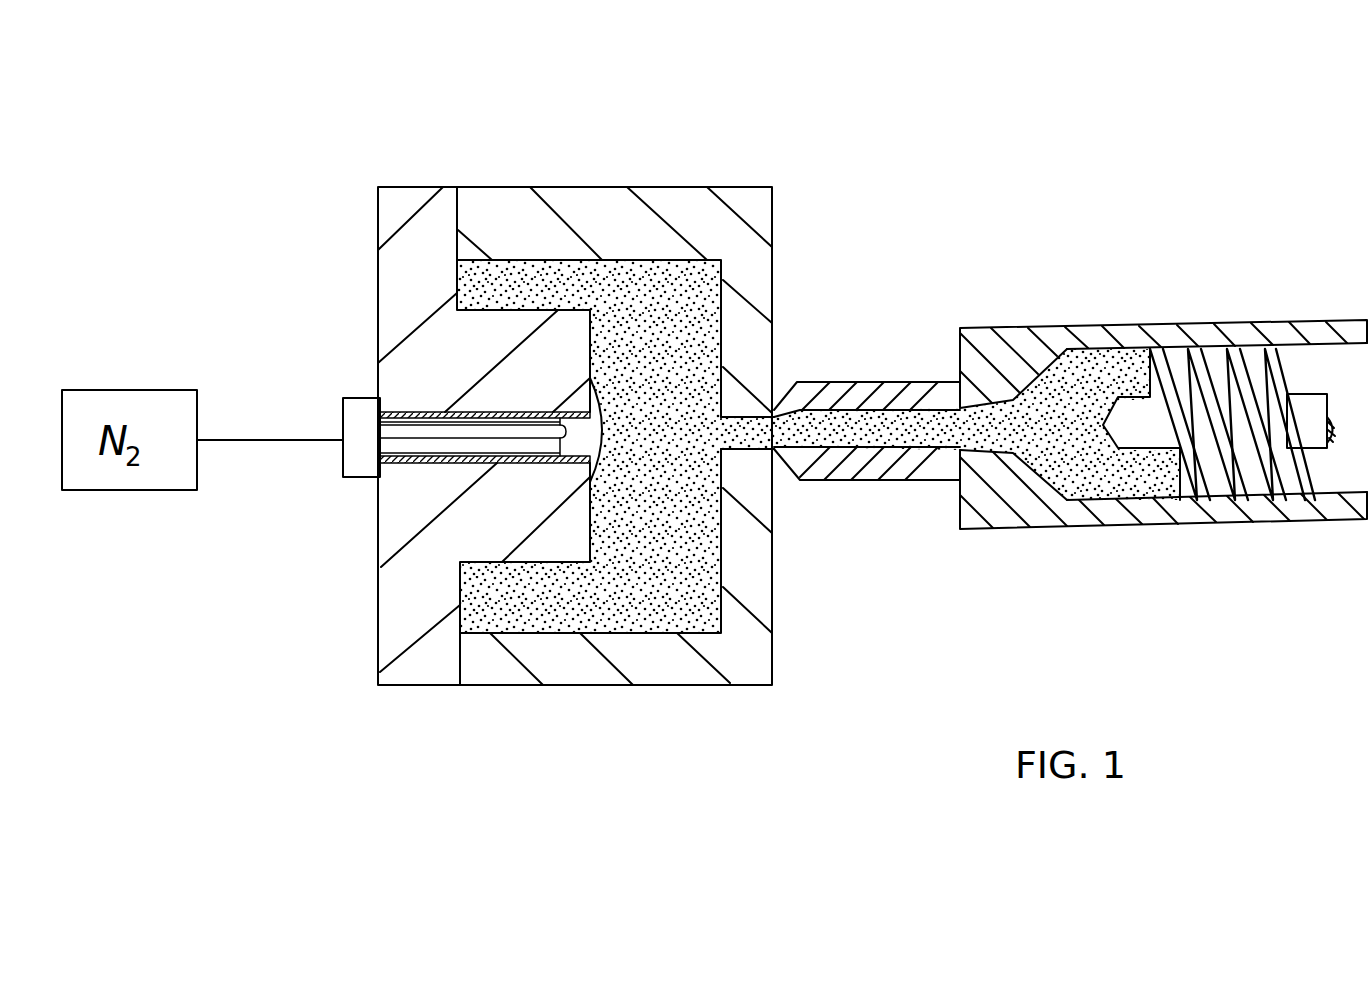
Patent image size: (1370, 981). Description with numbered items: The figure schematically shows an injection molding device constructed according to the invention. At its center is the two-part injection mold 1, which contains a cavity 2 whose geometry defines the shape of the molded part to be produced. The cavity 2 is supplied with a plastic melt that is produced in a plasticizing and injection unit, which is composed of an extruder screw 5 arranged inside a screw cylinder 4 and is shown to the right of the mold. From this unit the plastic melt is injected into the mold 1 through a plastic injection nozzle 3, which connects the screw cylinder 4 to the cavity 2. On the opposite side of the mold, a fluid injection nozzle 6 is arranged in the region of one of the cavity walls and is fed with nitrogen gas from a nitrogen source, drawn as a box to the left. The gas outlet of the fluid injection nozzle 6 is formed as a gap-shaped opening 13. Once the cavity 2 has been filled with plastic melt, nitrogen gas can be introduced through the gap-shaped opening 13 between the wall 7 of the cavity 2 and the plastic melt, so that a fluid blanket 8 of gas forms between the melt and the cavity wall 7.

The two-part injection mold 1 is at (420, 232).
The cavity 2 is at (677, 307).
The plastic injection nozzle 3 is at (847, 393).
The screw cylinder 4 is at (1000, 353).
The extruder screw 5 is at (1210, 413).
The fluid injection nozzle 6 is at (490, 443).
The wall 7 is at (597, 517).
The fluid blanket 8 is at (602, 405).
The gap-shaped opening 13 is at (588, 382).